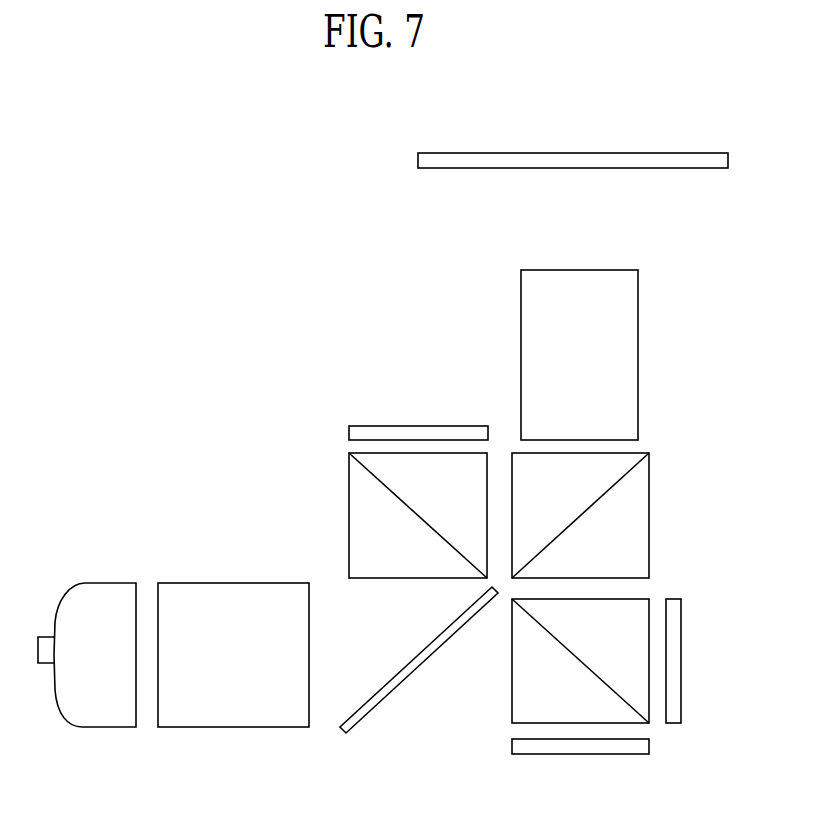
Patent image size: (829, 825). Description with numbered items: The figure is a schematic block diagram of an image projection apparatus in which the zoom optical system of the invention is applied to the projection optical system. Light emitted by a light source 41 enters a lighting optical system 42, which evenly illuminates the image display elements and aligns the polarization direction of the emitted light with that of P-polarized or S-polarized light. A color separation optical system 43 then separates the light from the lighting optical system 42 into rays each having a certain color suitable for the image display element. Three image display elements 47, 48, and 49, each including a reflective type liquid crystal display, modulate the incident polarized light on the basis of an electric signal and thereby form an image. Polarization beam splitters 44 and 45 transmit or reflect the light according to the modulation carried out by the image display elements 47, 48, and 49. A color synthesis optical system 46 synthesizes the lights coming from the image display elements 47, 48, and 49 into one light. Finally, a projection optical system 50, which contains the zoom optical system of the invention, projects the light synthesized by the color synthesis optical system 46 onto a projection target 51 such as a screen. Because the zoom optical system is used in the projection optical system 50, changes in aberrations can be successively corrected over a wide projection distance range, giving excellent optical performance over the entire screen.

The light source 41 is at (104, 590).
The lighting optical system 42 is at (236, 586).
The color separation optical system 43 is at (365, 718).
The polarization beam splitter 44 is at (348, 514).
The polarization beam splitter 45 is at (512, 677).
The color synthesis optical system 46 is at (645, 517).
The image display element 47 is at (425, 425).
The image display element 48 is at (592, 753).
The image display element 49 is at (681, 645).
The projection optical system 50 is at (638, 348).
The projection target 51 is at (418, 160).